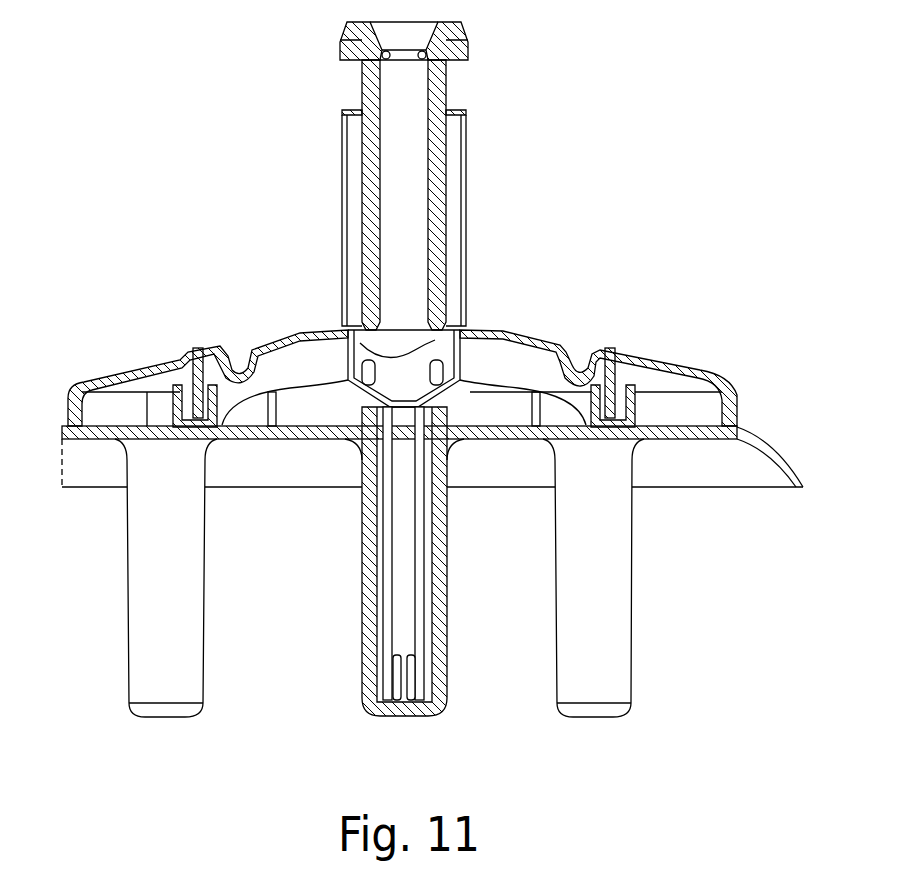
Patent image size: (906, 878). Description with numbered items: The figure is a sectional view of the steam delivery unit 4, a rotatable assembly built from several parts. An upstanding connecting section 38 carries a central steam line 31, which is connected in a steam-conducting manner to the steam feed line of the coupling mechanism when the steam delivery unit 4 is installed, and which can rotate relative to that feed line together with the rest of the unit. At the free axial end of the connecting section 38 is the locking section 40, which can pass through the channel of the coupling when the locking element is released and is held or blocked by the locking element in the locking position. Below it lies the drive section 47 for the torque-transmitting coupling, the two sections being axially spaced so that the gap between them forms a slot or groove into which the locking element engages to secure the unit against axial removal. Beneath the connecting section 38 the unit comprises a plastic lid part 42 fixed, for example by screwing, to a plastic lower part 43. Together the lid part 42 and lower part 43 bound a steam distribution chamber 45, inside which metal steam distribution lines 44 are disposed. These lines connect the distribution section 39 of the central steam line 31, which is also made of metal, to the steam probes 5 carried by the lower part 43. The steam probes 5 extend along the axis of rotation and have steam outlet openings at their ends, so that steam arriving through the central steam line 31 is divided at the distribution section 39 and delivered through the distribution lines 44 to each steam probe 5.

The steam delivery unit 4 is at (668, 303).
The steam probes 5 is at (183, 637).
The central steam line 31 is at (410, 183).
The connecting section 38 is at (450, 147).
The distribution section 39 is at (404, 366).
The locking section 40 is at (455, 45).
The lid part 42 is at (685, 382).
The lower part 43 is at (102, 470).
The steam distribution lines 44 is at (280, 385).
The steam distribution chamber 45 is at (330, 385).
The drive section 47 is at (355, 143).